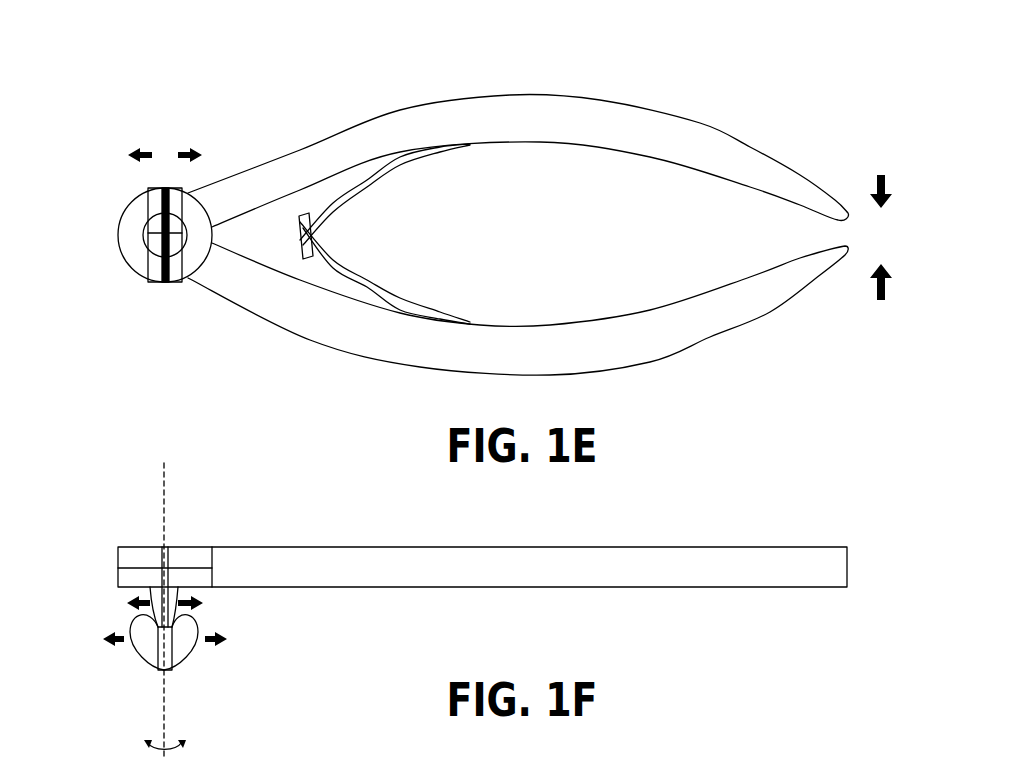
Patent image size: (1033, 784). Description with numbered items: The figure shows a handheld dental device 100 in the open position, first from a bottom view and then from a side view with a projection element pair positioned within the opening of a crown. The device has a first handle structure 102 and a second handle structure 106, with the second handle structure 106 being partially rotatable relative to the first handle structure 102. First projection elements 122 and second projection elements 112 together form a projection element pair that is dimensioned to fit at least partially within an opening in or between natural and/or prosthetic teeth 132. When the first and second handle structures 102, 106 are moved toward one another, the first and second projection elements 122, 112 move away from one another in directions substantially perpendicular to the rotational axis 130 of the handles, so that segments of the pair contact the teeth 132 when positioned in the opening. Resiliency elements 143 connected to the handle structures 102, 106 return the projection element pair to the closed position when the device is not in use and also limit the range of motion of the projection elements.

In FIG. 1E, the handheld dental device 100 is at (462, 214).
In FIG. 1F, the handheld dental device 100 is at (466, 579).
In FIG. 1E, the first handle structure 102 is at (710, 337).
In FIG. 1E, the second handle structure 106 is at (722, 152).
In FIG. 1F, the second handle structure 106 is at (773, 575).
In FIG. 1E, the second projection elements 112 is at (153, 273).
In FIG. 1E, the first projection elements 122 is at (156, 217).
In FIG. 1F, the rotational axis 130 is at (164, 502).
In FIG. 1F, the natural and/or prosthetic teeth 132 is at (180, 655).
In FIG. 1E, the resiliency elements 143 is at (400, 168).